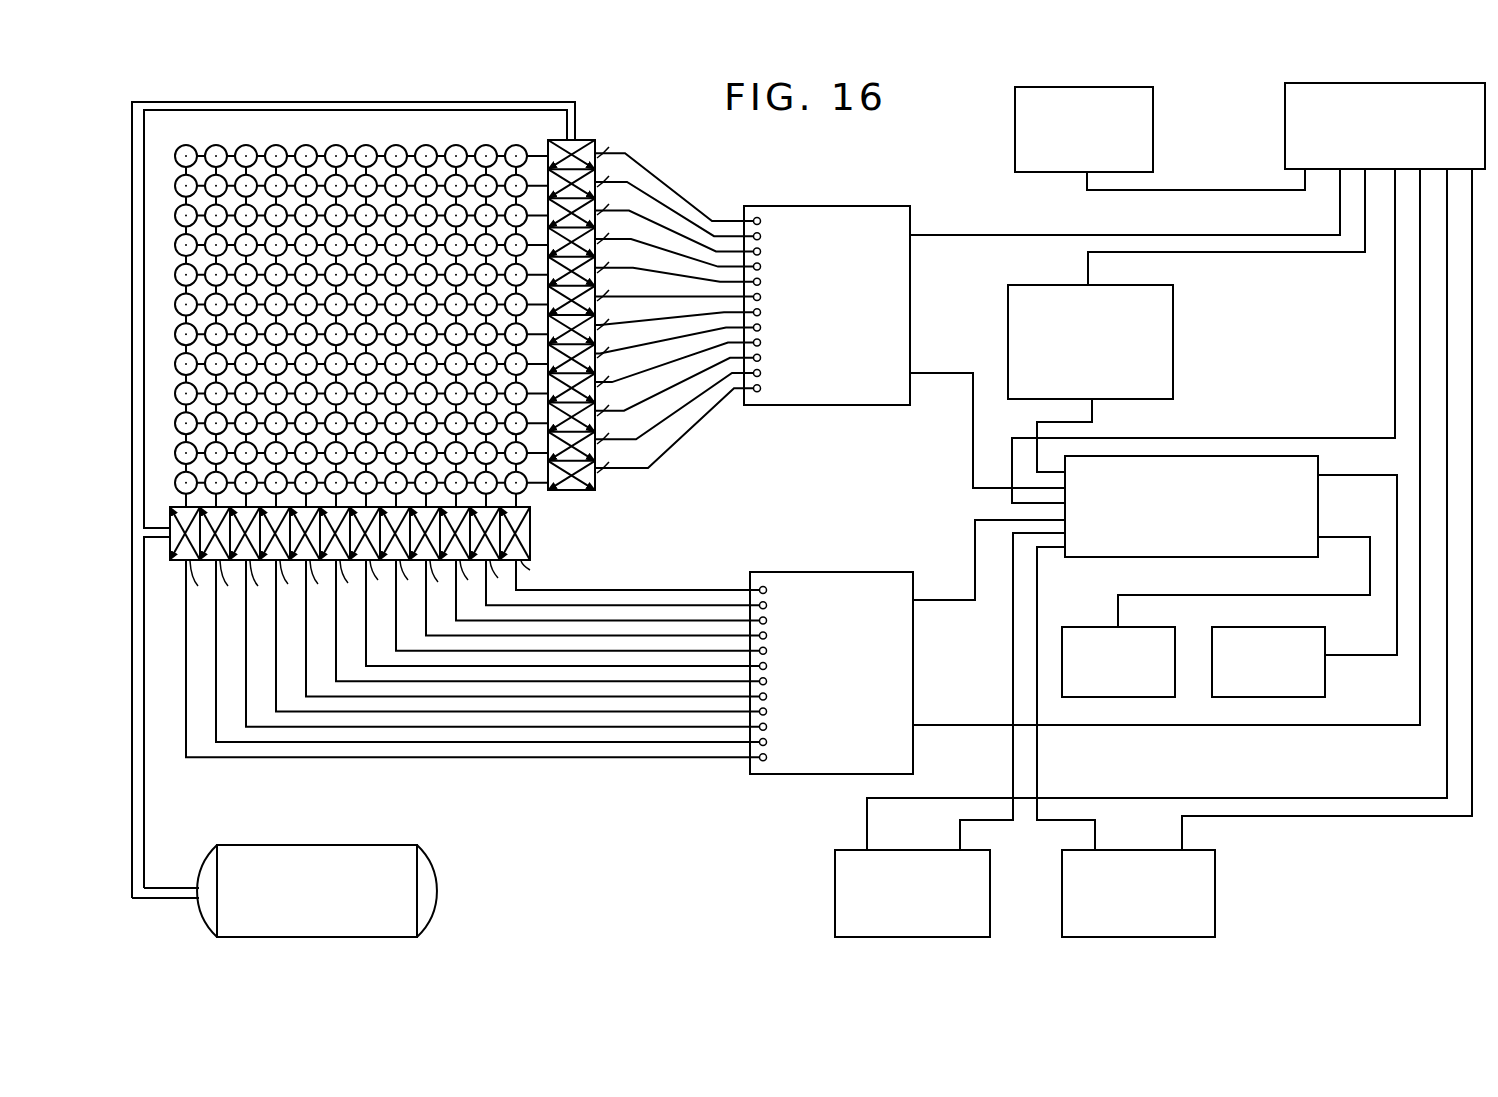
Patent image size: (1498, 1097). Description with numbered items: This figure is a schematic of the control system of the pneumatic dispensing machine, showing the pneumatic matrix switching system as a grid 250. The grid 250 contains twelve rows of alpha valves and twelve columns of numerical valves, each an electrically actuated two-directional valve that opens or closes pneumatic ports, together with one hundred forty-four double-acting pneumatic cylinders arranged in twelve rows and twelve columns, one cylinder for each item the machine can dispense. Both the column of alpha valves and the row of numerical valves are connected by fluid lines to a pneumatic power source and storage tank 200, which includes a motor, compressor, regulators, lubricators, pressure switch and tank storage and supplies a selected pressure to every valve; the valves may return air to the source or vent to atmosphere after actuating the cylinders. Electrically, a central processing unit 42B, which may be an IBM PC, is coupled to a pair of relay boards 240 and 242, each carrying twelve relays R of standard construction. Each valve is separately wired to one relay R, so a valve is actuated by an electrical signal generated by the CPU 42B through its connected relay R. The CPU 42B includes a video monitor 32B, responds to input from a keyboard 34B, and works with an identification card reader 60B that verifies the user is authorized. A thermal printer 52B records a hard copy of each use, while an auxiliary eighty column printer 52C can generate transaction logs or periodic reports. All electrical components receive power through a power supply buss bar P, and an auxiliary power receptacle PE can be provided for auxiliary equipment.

The grid 250 is at (396, 99).
The pneumatic power source and storage tank 200 is at (330, 938).
The relay board 240 is at (752, 310).
The relay board 242 is at (549, 667).
The electrical relay R is at (765, 485).
The auxiliary power receptacle PE is at (1160, 138).
The power supply buss bar P is at (1176, 466).
The video display monitor 32B is at (1090, 378).
The central processing unit 42B is at (1153, 611).
The identification card reader 60B is at (1118, 662).
The keyboard 34B is at (1268, 662).
The thermal printer 52B is at (912, 893).
The auxiliary eighty column printer 52C is at (1138, 893).